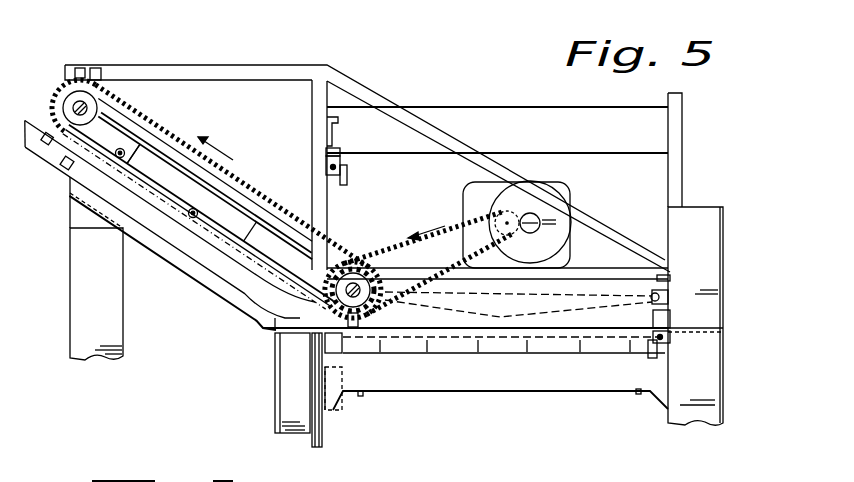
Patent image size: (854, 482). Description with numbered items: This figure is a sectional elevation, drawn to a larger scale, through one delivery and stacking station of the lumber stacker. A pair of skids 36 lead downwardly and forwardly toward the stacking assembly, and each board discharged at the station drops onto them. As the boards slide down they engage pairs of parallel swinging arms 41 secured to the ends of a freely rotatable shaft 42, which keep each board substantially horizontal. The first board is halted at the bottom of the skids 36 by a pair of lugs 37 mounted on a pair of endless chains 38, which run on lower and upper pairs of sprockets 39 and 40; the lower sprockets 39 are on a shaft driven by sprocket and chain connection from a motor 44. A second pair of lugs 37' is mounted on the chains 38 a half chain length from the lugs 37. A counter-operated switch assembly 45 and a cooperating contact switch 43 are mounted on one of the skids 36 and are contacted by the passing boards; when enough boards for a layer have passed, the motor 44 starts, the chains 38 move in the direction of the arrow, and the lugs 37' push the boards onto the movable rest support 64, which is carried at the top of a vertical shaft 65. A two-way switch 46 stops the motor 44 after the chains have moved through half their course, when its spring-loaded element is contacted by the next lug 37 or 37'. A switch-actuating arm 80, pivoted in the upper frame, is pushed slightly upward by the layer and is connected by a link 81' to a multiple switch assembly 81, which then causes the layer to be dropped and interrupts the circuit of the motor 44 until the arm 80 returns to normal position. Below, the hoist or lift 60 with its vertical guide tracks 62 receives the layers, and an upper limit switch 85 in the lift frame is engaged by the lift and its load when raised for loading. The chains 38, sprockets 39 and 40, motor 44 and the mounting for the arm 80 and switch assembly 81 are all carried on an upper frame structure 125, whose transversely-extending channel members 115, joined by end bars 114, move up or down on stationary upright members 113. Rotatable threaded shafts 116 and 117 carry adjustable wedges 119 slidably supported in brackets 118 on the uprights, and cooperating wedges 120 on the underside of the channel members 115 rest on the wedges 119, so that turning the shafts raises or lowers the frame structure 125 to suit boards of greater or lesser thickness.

The skids 36 is at (145, 232).
The lugs 37 is at (373, 320).
The second pair of lugs 37' is at (84, 54).
The endless chains 38 is at (284, 212).
The lower sprockets 39 is at (362, 278).
The upper sprockets 40 is at (67, 92).
The arms 41 is at (118, 191).
The shaft 42 is at (172, 189).
The contact switch 43 is at (64, 167).
The motor 44 is at (547, 195).
The counter-operated switch assembly 45 is at (43, 136).
The two-way switch 46 is at (97, 68).
The hoist or lift 60 is at (496, 357).
The vertical guide tracks 62 is at (288, 421).
The movable rest support 64 is at (592, 329).
The vertical shaft 65 is at (318, 448).
The switch-actuating arm 80 is at (518, 303).
The multiple switch assembly 81 is at (537, 236).
The link 81' is at (445, 263).
The upper limit switch 85 is at (343, 397).
The stationary upright members 113 is at (682, 130).
The end bars 114 is at (532, 125).
The channel members 115 is at (338, 130).
The rotatable shaft 116 is at (346, 172).
The rotatable shaft 117 is at (672, 342).
The brackets 118 is at (343, 187).
The adjustable wedges 119 is at (327, 161).
The cooperating wedges 120 is at (327, 149).
The upper frame structure 125 is at (293, 64).